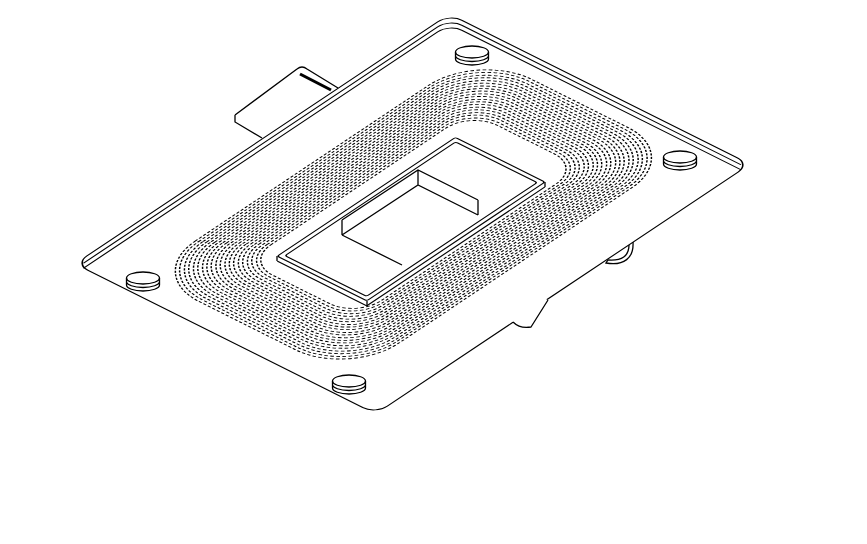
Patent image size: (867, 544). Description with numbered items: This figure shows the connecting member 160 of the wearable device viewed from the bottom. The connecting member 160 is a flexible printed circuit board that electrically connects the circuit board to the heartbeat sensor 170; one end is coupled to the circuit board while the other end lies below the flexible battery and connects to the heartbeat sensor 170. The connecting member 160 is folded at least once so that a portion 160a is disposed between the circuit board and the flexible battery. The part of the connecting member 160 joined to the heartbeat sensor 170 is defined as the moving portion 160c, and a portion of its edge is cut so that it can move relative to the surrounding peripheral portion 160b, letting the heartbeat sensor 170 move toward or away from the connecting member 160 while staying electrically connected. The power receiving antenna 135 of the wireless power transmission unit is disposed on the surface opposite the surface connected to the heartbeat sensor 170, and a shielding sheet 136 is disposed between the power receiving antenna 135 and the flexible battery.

The power receiving antenna 135 is at (525, 267).
The shielding sheet 136 is at (160, 200).
The connecting member 160 is at (222, 358).
The portion of the connecting member 160a is at (270, 87).
The peripheral portion 160b is at (368, 265).
The moving portion 160c is at (673, 198).
The heartbeat sensor 170 is at (428, 228).